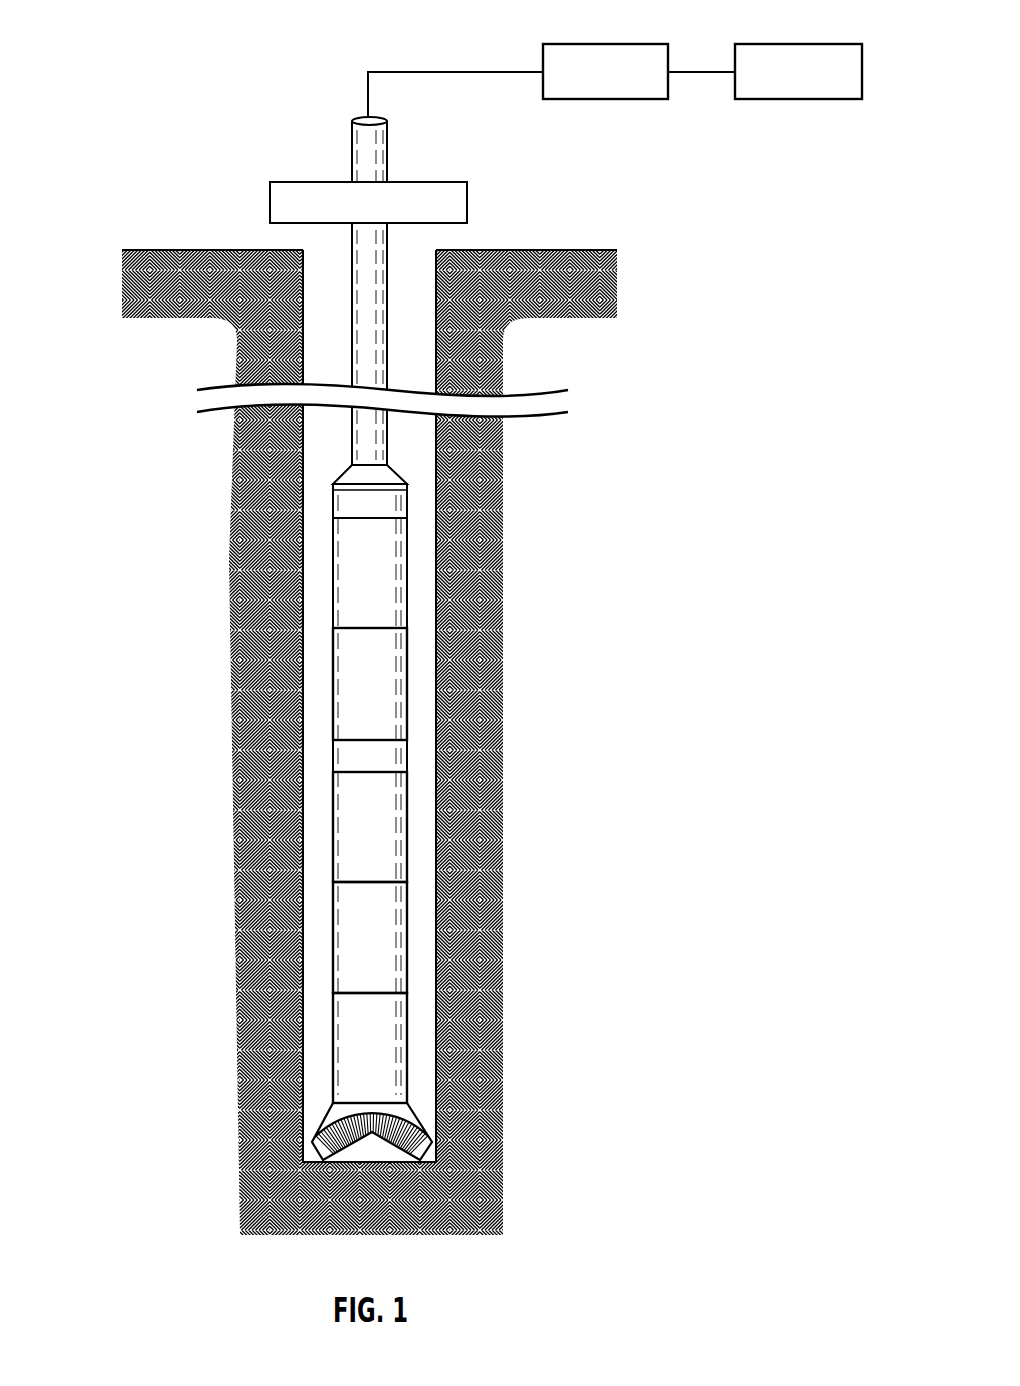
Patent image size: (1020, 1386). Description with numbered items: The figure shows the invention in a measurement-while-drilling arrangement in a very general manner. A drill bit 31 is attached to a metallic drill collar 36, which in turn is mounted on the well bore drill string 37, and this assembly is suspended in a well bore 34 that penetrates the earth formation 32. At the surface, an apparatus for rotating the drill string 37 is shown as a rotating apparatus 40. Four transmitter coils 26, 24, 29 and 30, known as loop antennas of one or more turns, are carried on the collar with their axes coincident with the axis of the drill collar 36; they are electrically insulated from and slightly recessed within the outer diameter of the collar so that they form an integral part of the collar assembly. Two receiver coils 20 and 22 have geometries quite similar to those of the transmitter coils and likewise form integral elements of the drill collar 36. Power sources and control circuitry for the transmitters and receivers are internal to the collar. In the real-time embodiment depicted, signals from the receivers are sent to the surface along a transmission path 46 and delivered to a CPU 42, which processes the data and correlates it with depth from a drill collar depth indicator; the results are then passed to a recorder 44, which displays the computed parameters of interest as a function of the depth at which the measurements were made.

The receiver coil 20 is at (407, 772).
The receiver coil 22 is at (407, 740).
The transmitter coil 24 is at (407, 993).
The transmitter coil 26 is at (407, 882).
The transmitter coil 29 is at (407, 628).
The transmitter coil 30 is at (407, 518).
The drill bit 31 is at (420, 1117).
The earth formation 32 is at (250, 357).
The well bore 34 is at (317, 587).
The drill collar 36 is at (370, 827).
The drill string 37 is at (368, 360).
The apparatus for rotating the drill string 40 is at (292, 182).
The CPU 42 is at (588, 44).
The recorder 44 is at (770, 44).
The data transmission path 46 is at (428, 70).